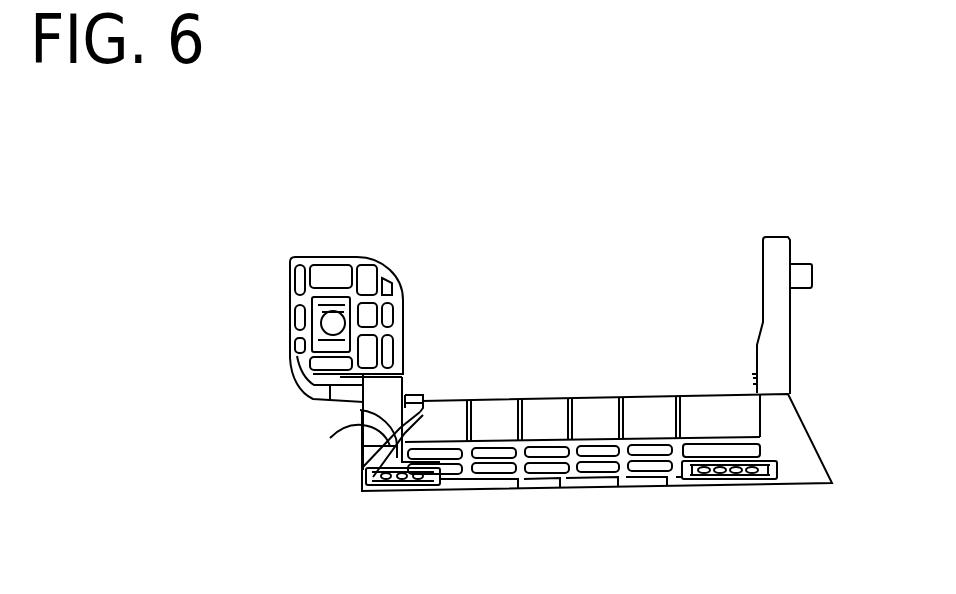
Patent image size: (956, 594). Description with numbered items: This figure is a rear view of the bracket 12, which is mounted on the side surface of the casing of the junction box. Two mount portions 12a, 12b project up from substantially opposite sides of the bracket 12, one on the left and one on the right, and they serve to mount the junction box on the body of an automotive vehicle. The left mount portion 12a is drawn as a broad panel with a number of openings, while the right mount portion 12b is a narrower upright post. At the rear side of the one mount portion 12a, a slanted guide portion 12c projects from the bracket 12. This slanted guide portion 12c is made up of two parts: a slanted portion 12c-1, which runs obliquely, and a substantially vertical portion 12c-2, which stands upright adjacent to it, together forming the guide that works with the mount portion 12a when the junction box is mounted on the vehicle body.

The bracket 12 is at (600, 378).
The mount portion 12a is at (290, 270).
The mount portion 12b is at (787, 237).
The slanted guide portion 12c is at (367, 427).
The slanted portion 12c-1 is at (360, 410).
The substantially vertical portion 12c-2 is at (424, 402).